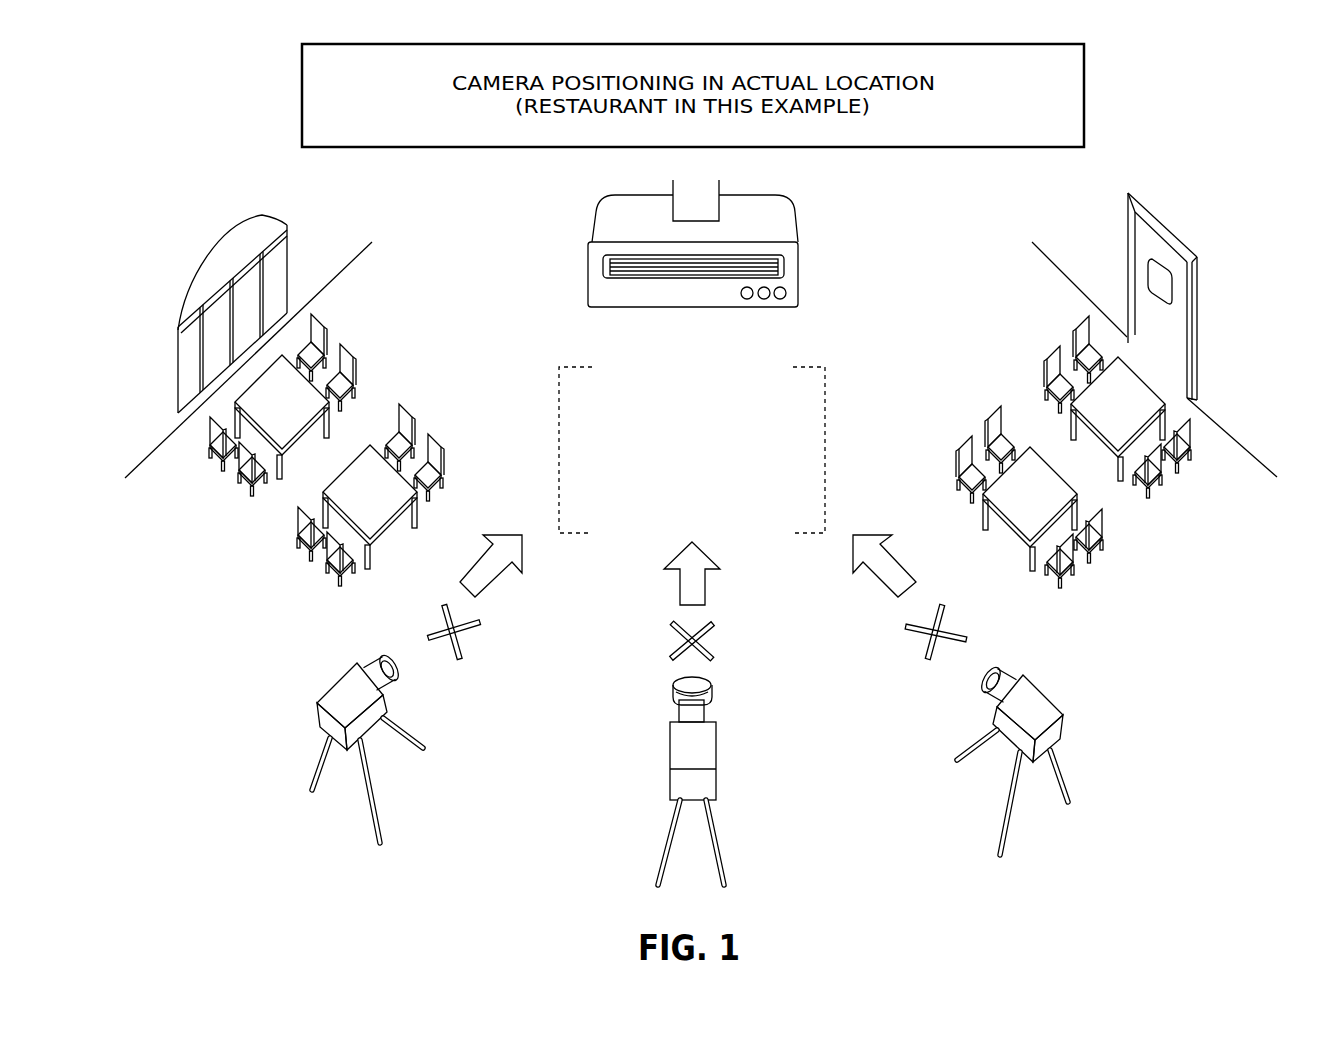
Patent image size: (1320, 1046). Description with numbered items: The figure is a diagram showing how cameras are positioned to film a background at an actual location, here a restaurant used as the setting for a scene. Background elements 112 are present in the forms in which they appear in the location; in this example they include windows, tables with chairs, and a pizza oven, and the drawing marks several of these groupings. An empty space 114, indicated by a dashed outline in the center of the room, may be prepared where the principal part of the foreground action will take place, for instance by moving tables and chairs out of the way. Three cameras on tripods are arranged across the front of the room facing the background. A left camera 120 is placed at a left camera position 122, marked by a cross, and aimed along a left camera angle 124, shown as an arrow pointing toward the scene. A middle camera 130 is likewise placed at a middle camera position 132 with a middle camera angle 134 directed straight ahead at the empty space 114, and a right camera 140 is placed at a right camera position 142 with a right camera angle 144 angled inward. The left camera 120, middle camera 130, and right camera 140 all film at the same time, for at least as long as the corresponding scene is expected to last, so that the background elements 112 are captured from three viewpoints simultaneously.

The background elements 112 is at (800, 285).
The empty space 114 is at (808, 439).
The left camera 120 is at (317, 712).
The left camera position 122 is at (458, 645).
The left camera angle 124 is at (515, 533).
The middle camera 130 is at (716, 750).
The middle camera position 132 is at (712, 657).
The middle camera angle 134 is at (705, 597).
The right camera 140 is at (1062, 737).
The right camera position 142 is at (967, 638).
The right camera angle 144 is at (872, 533).